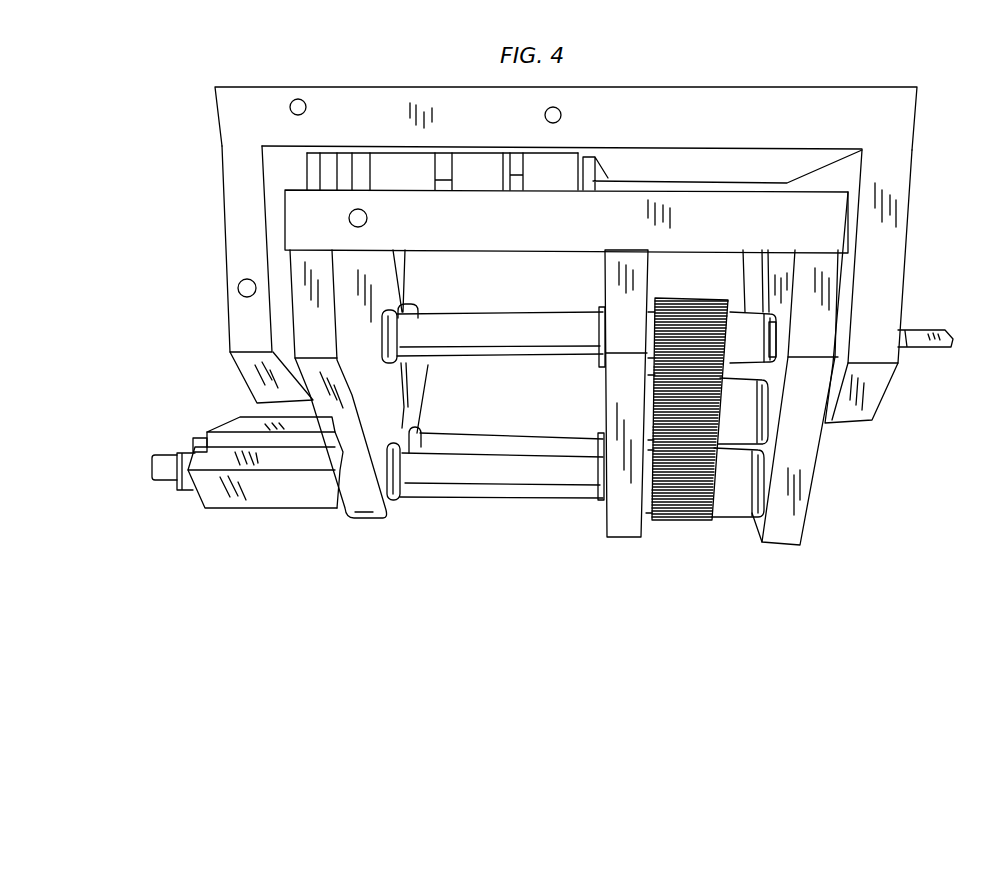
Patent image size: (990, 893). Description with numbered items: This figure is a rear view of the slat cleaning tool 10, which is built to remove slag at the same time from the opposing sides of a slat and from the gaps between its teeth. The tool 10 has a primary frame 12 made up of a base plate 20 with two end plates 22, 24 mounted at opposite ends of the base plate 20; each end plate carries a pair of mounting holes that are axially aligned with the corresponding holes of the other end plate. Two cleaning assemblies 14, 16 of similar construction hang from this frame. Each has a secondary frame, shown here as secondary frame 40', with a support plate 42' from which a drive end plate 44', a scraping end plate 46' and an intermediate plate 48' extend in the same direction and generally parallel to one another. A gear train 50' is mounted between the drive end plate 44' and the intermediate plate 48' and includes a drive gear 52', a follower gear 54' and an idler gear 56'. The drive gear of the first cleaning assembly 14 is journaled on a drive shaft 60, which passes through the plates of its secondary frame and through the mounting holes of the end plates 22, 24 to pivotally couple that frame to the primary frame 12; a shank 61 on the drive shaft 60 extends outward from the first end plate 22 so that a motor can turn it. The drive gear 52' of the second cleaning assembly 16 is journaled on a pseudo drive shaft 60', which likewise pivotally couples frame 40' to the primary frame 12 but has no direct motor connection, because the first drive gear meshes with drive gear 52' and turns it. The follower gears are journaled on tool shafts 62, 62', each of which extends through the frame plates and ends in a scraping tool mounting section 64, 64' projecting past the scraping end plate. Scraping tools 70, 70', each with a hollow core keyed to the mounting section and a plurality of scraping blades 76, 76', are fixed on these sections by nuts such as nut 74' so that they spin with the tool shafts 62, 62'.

The tool 10 is at (793, 75).
The primary frame 12 is at (210, 73).
The first cleaning assembly 14 is at (722, 272).
The second cleaning assembly 16 is at (403, 525).
The base plate 20 is at (375, 102).
The first end plate 22 is at (882, 267).
The second end plate 24 is at (223, 248).
The secondary frame 40' is at (814, 418).
The support plate 42' is at (566, 242).
The drive end plate 44' is at (819, 397).
The scraping end plate 46' is at (346, 409).
The intermediate plate 48' is at (605, 415).
The gear train 50' is at (735, 518).
The drive gear 52' is at (772, 337).
The follower gear 54' is at (681, 436).
The idler gear 56' is at (664, 405).
The drive shaft 60 is at (493, 310).
The pseudo drive shaft 60' is at (500, 382).
The shank 61 is at (935, 350).
The tool shaft 62 is at (495, 438).
The tool shaft 62' is at (502, 522).
The scraping tool mounting section 64 is at (178, 420).
The scraping tool mounting section 64' is at (158, 501).
The scraping tool 70 is at (256, 432).
The scraping tool 70' is at (339, 544).
The nut 74' is at (197, 505).
The scraping blades 76 is at (261, 400).
The scraping blades 76' is at (262, 516).